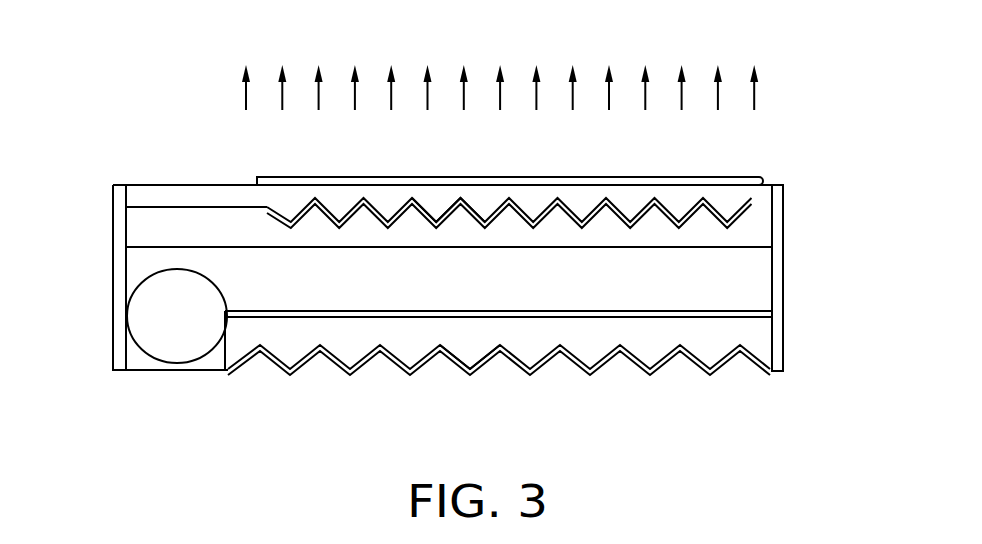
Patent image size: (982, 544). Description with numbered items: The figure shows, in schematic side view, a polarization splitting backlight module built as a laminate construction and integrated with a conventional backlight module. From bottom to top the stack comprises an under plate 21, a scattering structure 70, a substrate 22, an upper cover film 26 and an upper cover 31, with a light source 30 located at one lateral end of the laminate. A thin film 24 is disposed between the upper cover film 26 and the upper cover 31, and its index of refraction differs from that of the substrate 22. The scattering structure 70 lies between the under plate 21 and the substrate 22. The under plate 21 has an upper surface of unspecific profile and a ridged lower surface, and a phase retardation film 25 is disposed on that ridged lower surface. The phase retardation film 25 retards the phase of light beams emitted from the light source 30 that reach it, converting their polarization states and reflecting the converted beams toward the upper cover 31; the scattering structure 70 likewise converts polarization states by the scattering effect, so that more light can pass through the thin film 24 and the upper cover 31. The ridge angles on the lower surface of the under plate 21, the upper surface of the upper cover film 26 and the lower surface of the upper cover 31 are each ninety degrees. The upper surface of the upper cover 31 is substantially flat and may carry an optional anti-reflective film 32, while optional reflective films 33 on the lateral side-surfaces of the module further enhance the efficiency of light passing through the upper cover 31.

The under plate 21 is at (587, 350).
The substrate 22 is at (747, 287).
The thin film 24 is at (752, 210).
The phase retardation film 25 is at (470, 372).
The upper cover film 26 is at (763, 237).
The light source 30 is at (180, 340).
The upper cover 31 is at (444, 205).
The anti-reflective film 32 is at (738, 176).
The reflective films 33 is at (121, 273).
The scattering structure 70 is at (465, 311).